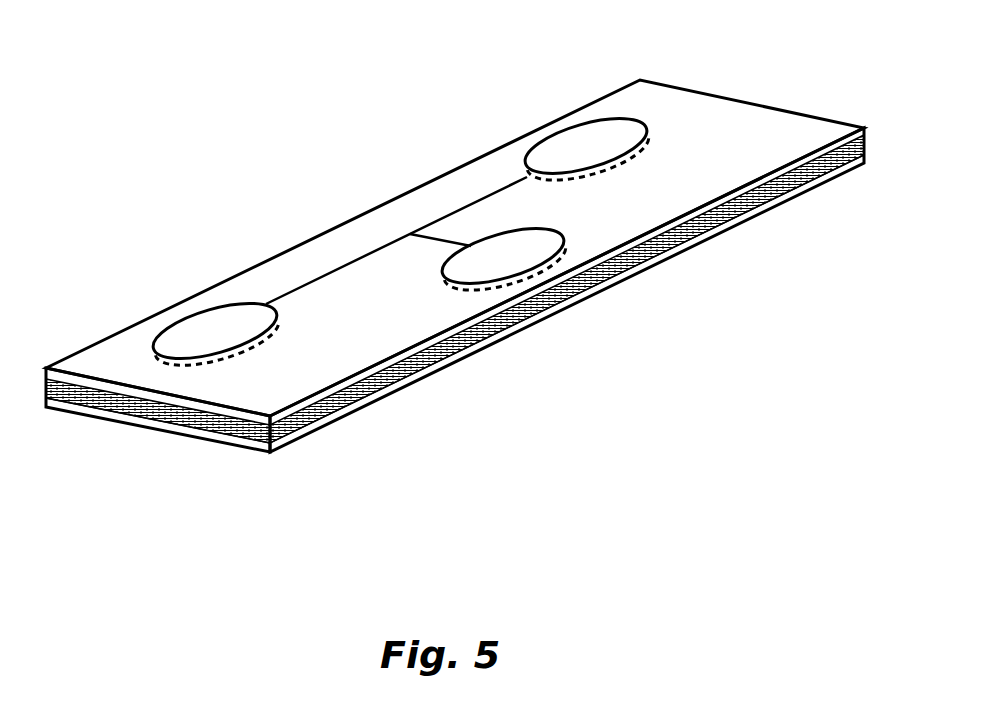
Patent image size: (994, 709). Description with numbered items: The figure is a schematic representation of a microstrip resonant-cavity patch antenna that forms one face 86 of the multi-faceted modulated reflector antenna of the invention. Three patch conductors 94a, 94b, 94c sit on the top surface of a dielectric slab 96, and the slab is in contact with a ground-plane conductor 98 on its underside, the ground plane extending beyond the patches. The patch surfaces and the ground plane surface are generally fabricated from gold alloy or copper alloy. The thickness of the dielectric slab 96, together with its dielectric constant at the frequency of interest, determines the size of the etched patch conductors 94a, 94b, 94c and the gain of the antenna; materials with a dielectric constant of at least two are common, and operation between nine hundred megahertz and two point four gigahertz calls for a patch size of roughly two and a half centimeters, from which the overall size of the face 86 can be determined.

The face 86 is at (745, 102).
The patch conductor 94a is at (202, 338).
The patch conductor 94b is at (485, 237).
The patch conductor 94c is at (583, 142).
The dielectric slab 96 is at (512, 323).
The ground-plane conductor 98 is at (352, 413).